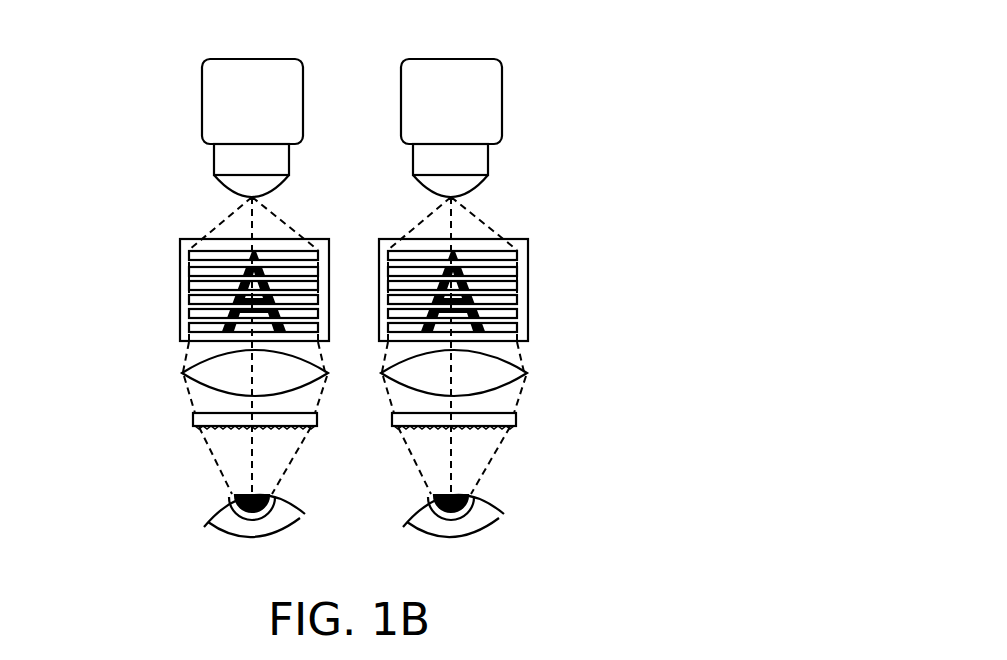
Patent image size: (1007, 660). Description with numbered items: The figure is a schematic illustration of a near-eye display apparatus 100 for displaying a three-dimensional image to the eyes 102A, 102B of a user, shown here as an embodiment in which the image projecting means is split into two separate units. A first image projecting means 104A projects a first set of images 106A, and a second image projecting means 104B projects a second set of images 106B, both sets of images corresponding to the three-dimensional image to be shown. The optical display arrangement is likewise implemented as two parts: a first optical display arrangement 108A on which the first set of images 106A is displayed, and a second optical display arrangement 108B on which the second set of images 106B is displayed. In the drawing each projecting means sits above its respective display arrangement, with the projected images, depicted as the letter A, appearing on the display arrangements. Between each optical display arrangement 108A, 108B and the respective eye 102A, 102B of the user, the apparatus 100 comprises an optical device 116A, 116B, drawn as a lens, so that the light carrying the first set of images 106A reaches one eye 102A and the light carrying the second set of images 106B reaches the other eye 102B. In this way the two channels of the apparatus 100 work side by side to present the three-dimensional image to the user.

The near-eye display apparatus 100 is at (662, 57).
The eye of the user 102A is at (181, 525).
The eye of the user 102B is at (520, 525).
The first image projecting means 104A is at (200, 128).
The second image projecting means 104B is at (505, 128).
The first set of images 106A is at (182, 262).
The second set of images 106B is at (527, 249).
The first optical display arrangement 108A is at (179, 290).
The second optical display arrangement 108B is at (530, 290).
The optical device 116A is at (175, 387).
The optical device 116B is at (540, 385).